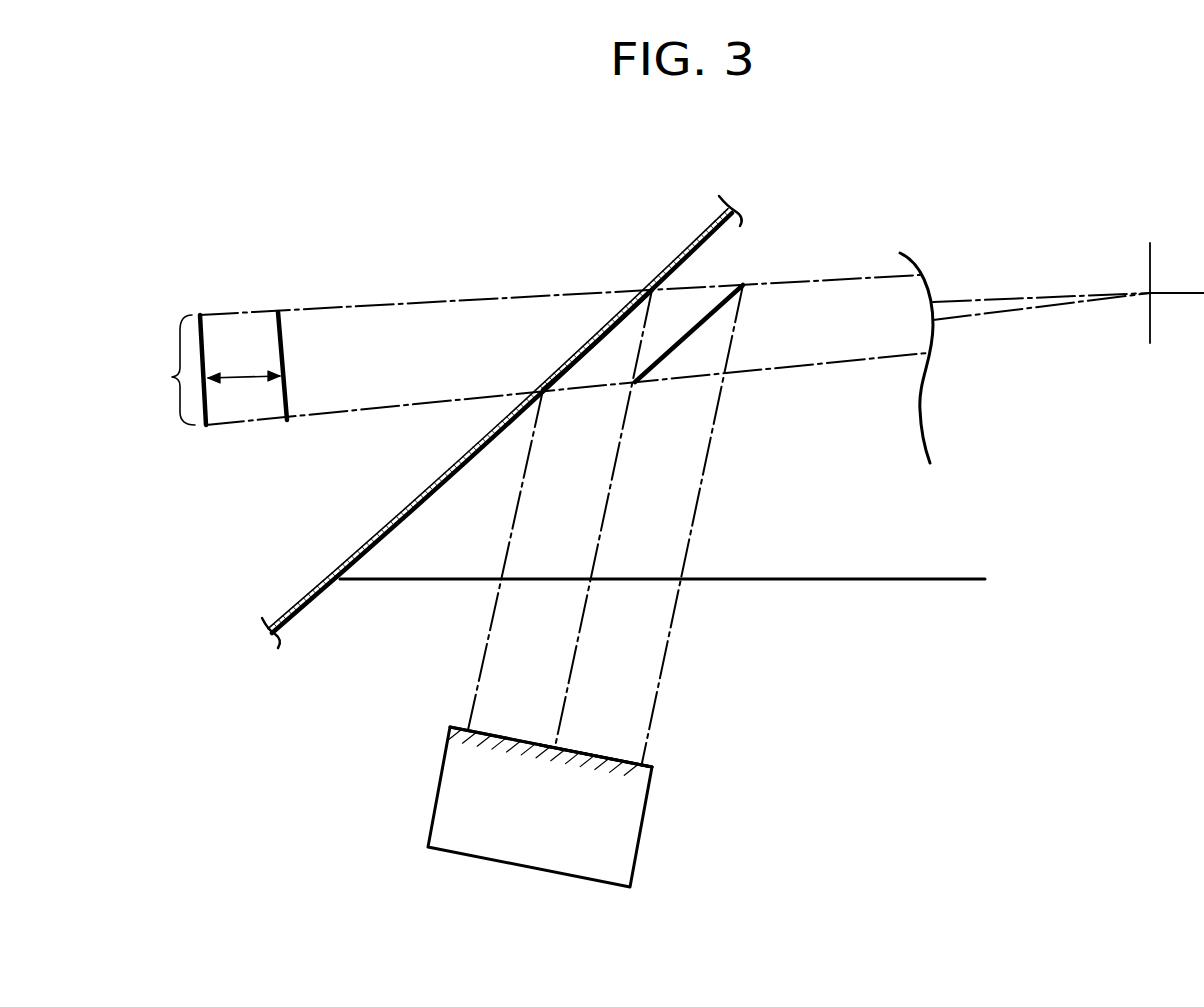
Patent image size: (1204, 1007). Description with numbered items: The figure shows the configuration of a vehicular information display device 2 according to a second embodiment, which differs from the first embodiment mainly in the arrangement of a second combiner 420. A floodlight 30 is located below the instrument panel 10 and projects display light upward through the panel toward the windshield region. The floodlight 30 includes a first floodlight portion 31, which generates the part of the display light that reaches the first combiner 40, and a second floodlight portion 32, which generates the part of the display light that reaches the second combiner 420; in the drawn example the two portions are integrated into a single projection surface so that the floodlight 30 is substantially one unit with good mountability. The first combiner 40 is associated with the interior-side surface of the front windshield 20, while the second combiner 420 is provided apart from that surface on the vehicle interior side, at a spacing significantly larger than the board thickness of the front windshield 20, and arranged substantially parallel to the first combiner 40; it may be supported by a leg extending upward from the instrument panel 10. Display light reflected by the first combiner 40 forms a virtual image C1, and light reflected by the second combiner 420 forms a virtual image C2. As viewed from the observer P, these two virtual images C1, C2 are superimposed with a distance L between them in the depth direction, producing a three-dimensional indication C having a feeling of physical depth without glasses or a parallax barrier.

The vehicular information display device 2 is at (789, 532).
The instrument panel 10 is at (843, 581).
The front windshield 20 is at (572, 347).
The floodlight 30 is at (584, 781).
The first floodlight portion 31 is at (605, 755).
The second floodlight portion 32 is at (512, 738).
The first combiner 40 is at (592, 345).
The second combiner 420 is at (684, 342).
The three-dimensional indication C is at (173, 370).
The virtual image according to the first combiner C1 is at (206, 405).
The virtual image according to the second combiner C2 is at (283, 398).
The distance between the two virtual images L is at (244, 366).
The observer P is at (1152, 293).